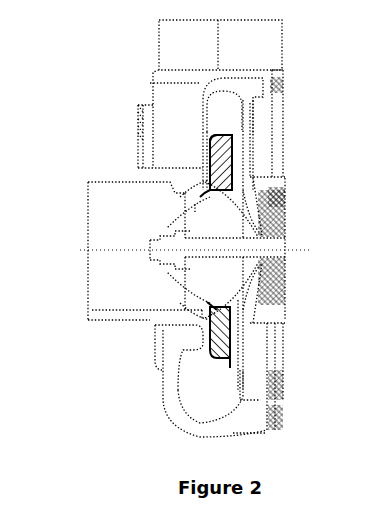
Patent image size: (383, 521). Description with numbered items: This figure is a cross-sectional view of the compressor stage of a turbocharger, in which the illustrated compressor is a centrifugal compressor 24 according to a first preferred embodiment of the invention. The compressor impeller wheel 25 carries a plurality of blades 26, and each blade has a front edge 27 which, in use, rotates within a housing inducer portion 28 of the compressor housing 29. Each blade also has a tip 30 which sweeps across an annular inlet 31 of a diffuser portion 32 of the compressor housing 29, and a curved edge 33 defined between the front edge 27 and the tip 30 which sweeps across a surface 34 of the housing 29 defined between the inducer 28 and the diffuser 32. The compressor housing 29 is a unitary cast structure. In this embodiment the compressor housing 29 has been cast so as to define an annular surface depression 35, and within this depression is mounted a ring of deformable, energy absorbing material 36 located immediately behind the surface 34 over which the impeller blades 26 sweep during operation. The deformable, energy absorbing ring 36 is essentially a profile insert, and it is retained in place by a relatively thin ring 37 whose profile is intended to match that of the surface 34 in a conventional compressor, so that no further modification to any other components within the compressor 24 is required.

The centrifugal compressor 24 is at (92, 67).
The compressor impeller wheel 25 is at (195, 208).
The blades 26 is at (202, 293).
The front edge 27 is at (188, 281).
The housing inducer portion 28 is at (105, 231).
The compressor housing 29 is at (168, 413).
The tip 30 is at (237, 171).
The annular inlet 31 is at (237, 153).
The diffuser portion 32 is at (237, 128).
The curved edge 33 is at (222, 308).
The surface 34 is at (227, 177).
The annular surface depression 35 is at (210, 352).
The ring of deformable, energy absorbing material 36 is at (211, 163).
The thin ring 37 is at (231, 366).